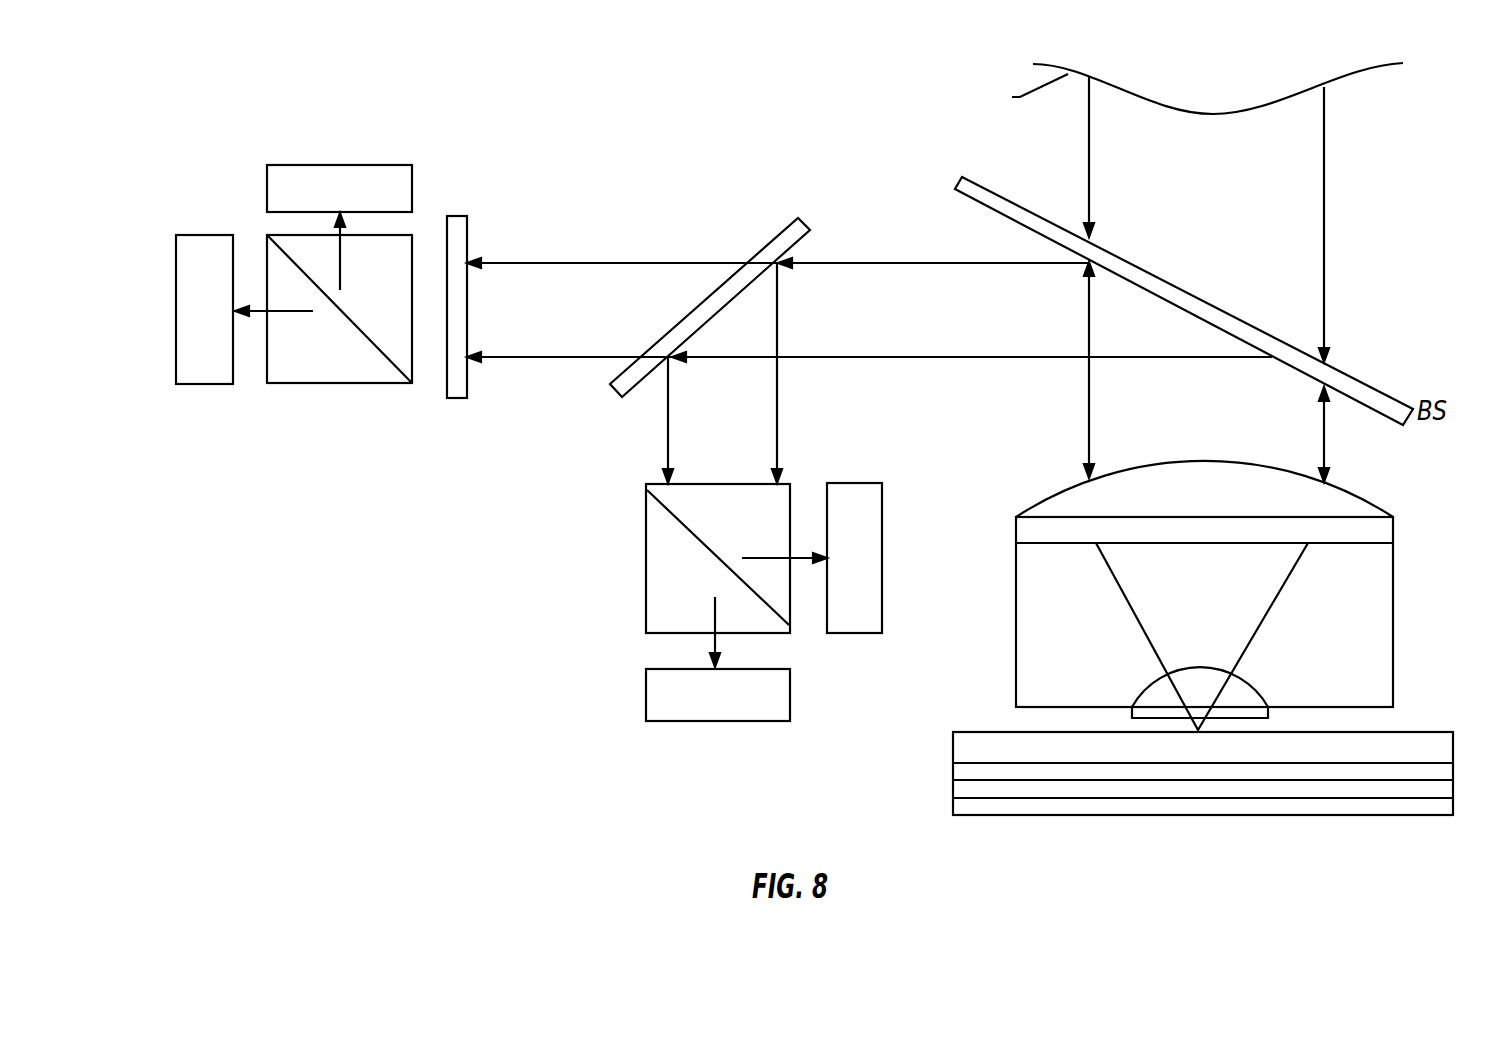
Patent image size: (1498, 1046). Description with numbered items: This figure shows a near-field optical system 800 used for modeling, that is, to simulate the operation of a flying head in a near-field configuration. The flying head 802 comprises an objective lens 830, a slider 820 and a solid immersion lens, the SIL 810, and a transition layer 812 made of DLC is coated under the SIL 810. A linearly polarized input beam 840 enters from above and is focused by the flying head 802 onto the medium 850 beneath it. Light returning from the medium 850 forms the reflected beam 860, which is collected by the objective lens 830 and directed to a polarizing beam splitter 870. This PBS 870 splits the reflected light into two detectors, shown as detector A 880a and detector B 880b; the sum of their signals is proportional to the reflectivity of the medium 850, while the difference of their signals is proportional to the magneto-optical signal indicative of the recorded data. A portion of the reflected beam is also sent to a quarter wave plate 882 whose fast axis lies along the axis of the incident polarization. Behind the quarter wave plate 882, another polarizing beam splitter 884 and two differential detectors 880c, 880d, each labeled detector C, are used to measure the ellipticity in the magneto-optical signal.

The system 800 is at (632, 69).
The flying head 802 is at (1254, 616).
The SIL 810 is at (1227, 673).
The transition layer 812 is at (1291, 688).
The slider 820 is at (1242, 612).
The objective lens 830 is at (1140, 457).
The input beam 840 is at (1231, 172).
The medium 850 is at (1157, 777).
The reflected beam 860 is at (768, 291).
The polarizing beam splitter 870 is at (681, 561).
The detector A 880a is at (856, 558).
The detector B 880b is at (675, 678).
The differential detector 880c is at (318, 199).
The differential detector 880d is at (216, 287).
The quarter wave plate 882 is at (429, 330).
The polarizing beam splitter 884 is at (331, 332).